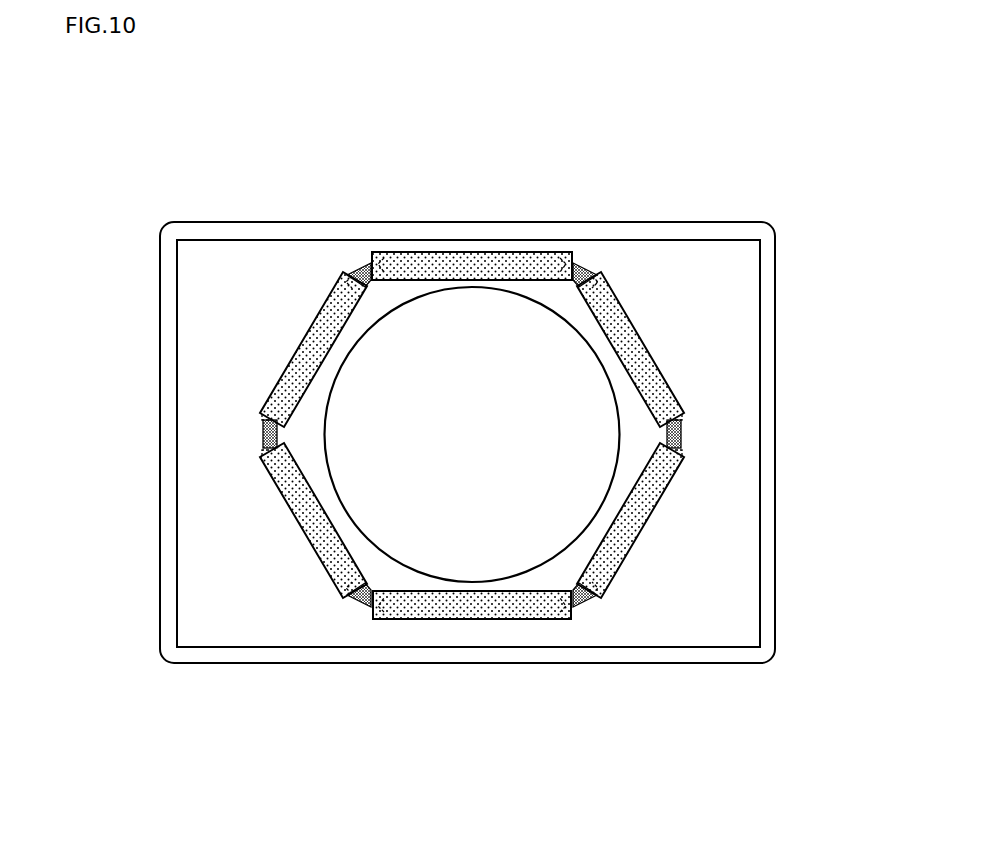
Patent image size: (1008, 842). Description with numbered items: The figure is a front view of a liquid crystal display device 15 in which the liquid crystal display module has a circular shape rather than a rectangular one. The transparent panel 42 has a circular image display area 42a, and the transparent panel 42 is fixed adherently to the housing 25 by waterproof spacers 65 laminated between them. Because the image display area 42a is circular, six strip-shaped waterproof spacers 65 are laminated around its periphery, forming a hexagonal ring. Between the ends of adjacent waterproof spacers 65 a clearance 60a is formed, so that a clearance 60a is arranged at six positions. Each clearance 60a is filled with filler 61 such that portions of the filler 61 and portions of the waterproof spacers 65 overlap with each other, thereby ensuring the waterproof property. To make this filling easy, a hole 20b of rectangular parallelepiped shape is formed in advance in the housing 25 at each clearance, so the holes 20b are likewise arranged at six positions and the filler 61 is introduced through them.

The liquid crystal display device 15 is at (471, 94).
The housing 25 is at (168, 283).
The transparent panel 42 is at (188, 362).
The image display area 42a is at (486, 495).
The waterproof spacers 65 is at (463, 265).
The filler 61 is at (360, 273).
The clearance 60a is at (347, 267).
The hole 20b is at (378, 262).